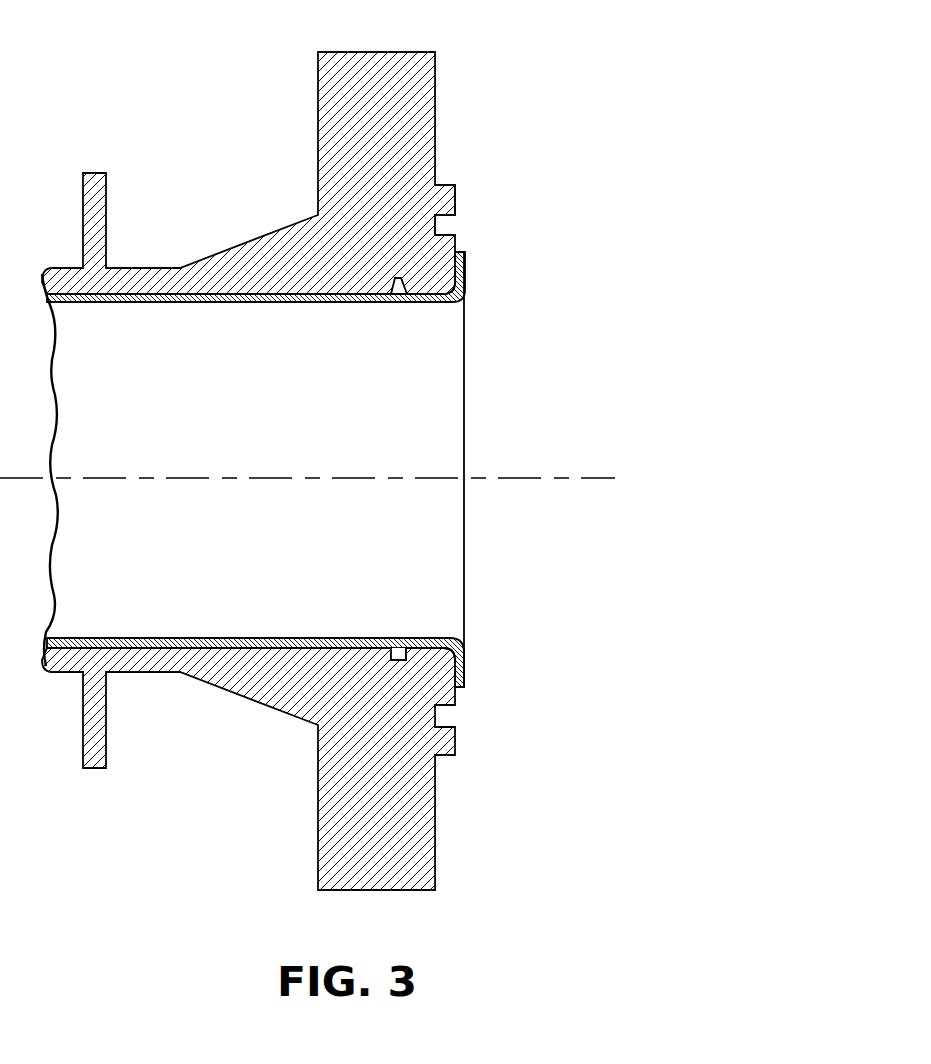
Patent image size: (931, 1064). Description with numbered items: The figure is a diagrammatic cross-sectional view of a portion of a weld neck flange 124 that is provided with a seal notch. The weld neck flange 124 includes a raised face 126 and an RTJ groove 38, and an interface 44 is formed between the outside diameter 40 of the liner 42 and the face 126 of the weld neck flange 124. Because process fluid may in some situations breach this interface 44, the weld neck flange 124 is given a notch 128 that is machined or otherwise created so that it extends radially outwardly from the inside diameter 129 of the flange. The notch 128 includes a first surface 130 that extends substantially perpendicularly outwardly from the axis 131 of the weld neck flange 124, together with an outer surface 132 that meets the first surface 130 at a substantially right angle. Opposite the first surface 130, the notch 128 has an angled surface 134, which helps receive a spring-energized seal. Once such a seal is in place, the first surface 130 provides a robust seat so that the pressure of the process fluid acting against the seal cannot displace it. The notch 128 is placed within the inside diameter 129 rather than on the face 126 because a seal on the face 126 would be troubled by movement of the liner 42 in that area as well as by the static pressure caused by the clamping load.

The weld neck flange 124 is at (388, 48).
The raised face 126 is at (457, 202).
The RTJ groove 38 is at (455, 233).
The interface 44 is at (458, 249).
The outside diameter 40 is at (466, 253).
The liner 42 is at (467, 402).
The inside diameter 129 is at (322, 303).
The notch 128 is at (400, 303).
The axis 131 is at (176, 481).
The outer surface 132 is at (400, 655).
The first surface 130 is at (396, 655).
The angled surface 134 is at (405, 655).